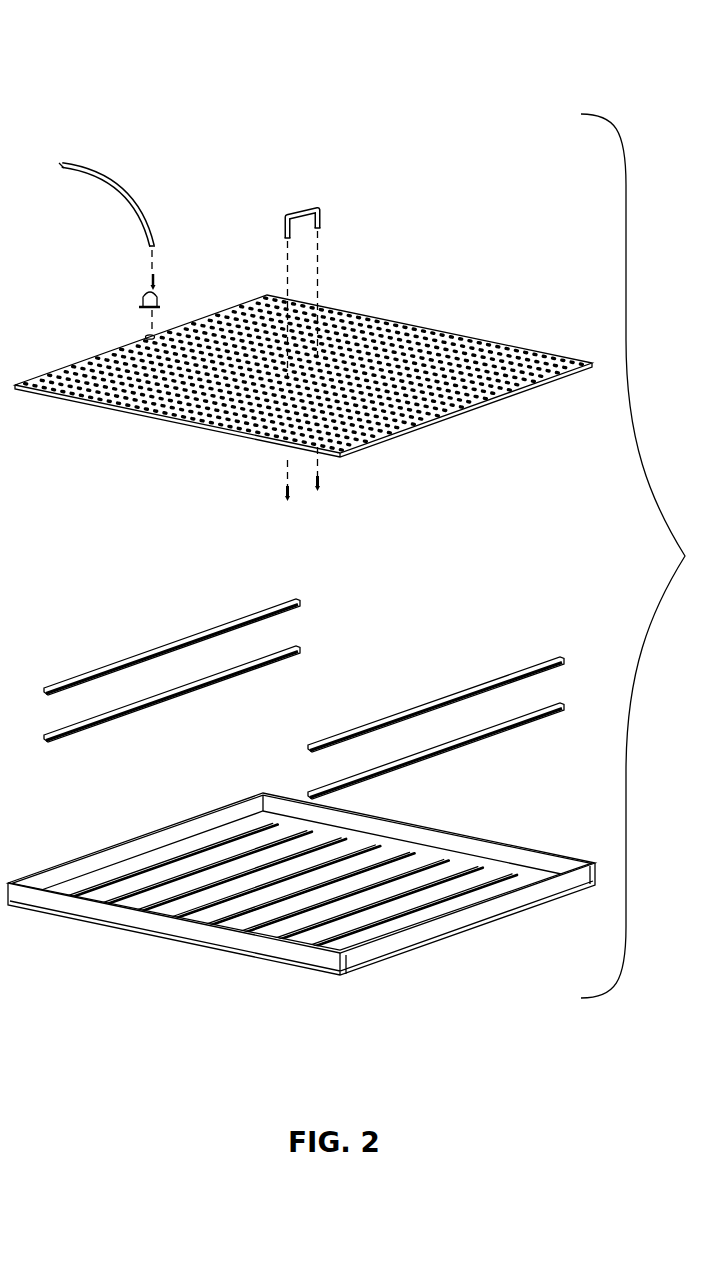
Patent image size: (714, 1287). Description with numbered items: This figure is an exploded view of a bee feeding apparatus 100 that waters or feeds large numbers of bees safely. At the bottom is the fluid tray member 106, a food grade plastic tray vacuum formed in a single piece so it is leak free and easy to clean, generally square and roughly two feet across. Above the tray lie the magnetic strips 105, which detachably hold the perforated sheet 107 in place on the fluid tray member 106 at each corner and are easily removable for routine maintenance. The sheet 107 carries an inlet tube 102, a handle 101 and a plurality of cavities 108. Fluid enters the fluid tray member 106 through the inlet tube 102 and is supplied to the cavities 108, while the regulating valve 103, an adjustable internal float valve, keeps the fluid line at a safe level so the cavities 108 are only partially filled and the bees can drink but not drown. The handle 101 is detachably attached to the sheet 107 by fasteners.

The bee feeding apparatus 100 is at (282, 58).
The handle 101 is at (308, 212).
The inlet tube 102 is at (117, 178).
The regulating valve 103 is at (148, 297).
The magnetic strips 105 is at (118, 713).
The fluid tray member 106 is at (173, 943).
The sheet 107 is at (418, 322).
The cavities 108 is at (477, 342).